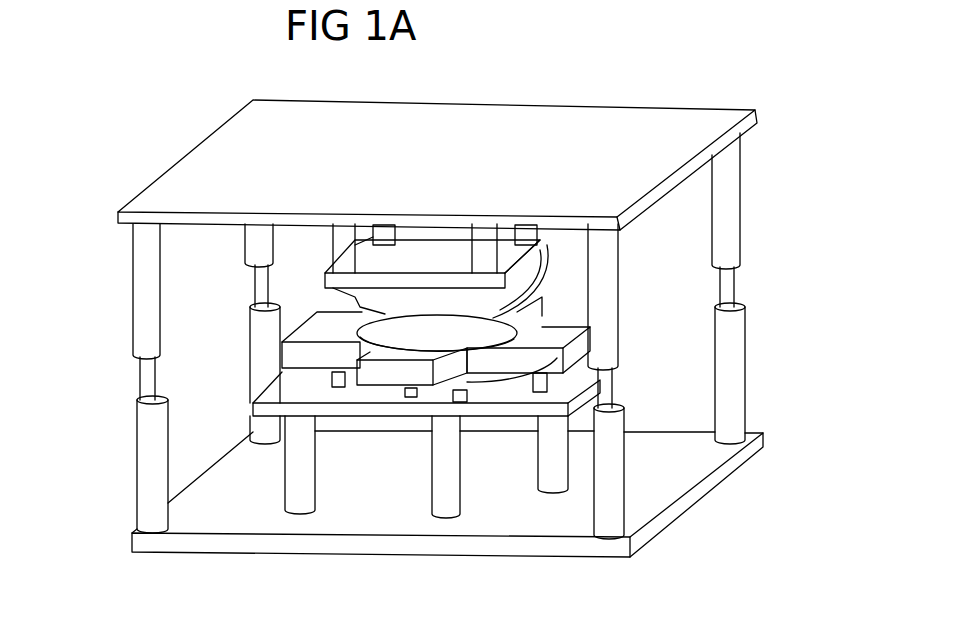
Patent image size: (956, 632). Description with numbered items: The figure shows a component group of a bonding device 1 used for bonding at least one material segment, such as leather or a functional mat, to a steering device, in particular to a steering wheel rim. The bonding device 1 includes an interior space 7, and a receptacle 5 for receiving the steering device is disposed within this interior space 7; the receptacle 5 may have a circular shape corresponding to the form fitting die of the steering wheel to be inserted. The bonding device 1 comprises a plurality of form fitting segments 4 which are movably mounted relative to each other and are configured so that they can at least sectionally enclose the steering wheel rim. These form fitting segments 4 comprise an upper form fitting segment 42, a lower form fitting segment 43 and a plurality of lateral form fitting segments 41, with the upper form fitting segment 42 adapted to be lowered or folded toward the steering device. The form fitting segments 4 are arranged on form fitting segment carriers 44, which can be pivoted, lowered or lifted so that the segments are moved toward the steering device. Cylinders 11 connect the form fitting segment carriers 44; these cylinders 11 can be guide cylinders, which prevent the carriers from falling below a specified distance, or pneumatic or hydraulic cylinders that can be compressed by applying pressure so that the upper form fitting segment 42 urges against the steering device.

The bonding device 1 is at (720, 85).
The form fitting segments 4 is at (418, 373).
The receptacle 5 is at (402, 337).
The interior space 7 is at (670, 223).
The cylinders 11 is at (727, 393).
The lateral form fitting segments 41 is at (323, 332).
The upper form fitting segment 42 is at (465, 308).
The lower form fitting segment 43 is at (468, 382).
The form fitting segment carrier 44 is at (438, 127).